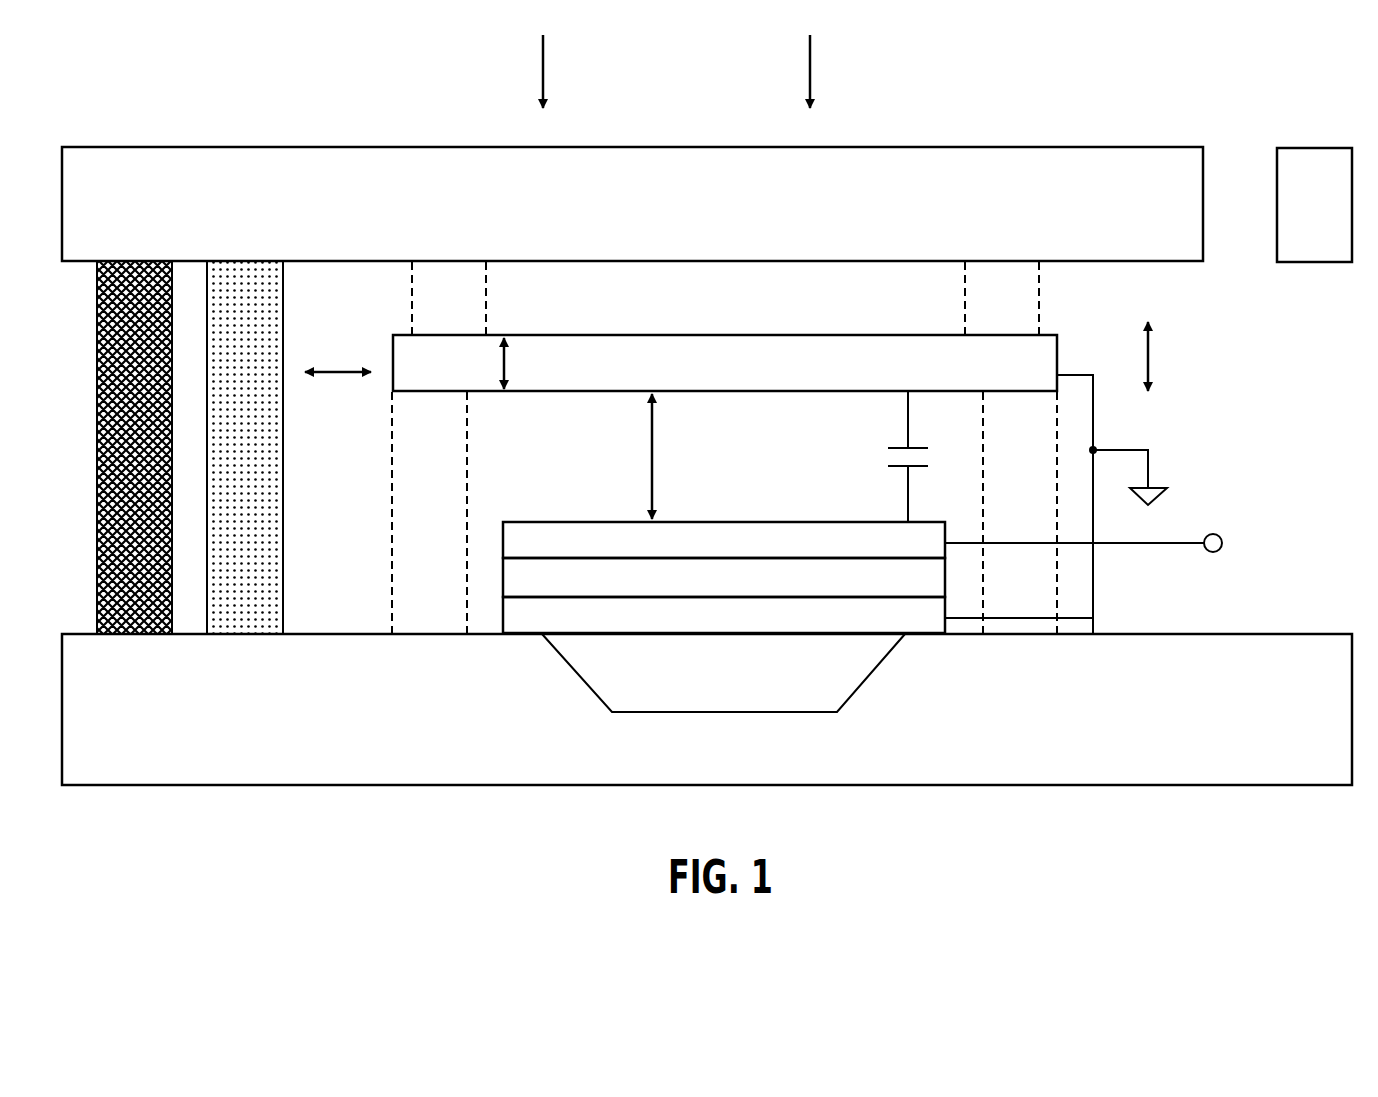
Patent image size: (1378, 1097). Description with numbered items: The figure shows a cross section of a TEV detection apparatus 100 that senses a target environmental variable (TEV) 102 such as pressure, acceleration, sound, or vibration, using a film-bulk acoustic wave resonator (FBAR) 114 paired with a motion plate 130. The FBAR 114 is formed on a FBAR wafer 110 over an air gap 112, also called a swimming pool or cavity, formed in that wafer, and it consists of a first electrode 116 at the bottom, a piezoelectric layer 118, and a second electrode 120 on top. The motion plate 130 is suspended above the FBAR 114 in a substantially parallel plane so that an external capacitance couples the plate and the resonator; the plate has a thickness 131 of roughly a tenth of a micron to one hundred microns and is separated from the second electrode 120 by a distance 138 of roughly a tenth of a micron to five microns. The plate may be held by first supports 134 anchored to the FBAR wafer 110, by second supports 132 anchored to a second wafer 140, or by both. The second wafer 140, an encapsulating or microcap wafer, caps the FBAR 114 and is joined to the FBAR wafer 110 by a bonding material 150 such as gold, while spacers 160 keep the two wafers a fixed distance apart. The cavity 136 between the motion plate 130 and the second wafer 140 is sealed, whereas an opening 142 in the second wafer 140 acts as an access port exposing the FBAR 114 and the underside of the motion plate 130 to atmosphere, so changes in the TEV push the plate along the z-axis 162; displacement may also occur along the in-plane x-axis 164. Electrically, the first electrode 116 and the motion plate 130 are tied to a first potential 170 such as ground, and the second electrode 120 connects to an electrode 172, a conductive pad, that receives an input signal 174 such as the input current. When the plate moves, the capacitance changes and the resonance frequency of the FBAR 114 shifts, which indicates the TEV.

The TEV detection apparatus 100 is at (295, 109).
The target environmental variable (TEV) 102 is at (676, 69).
The FBAR wafer 110 is at (928, 776).
The air gap 112 is at (741, 692).
The film-bulk acoustic wave resonator (FBAR) 114 is at (554, 516).
The first electrode 116 is at (846, 632).
The piezoelectric layer 118 is at (742, 595).
The second electrode 120 is at (852, 557).
The motion plate 130 is at (835, 379).
The thickness 131 is at (526, 363).
The second supports 132 is at (468, 312).
The first supports 134 is at (450, 518).
The cavity 136 is at (727, 312).
The distance 138 is at (674, 456).
The second wafer 140 is at (943, 218).
The opening 142 is at (1256, 160).
The bonding material 150 is at (154, 459).
The spacers 160 is at (263, 461).
The z-axis 162 is at (1173, 356).
The x-axis 164 is at (338, 351).
The first potential 170 is at (1156, 497).
The electrode 172 is at (1213, 553).
The input signal 174 is at (1158, 568).